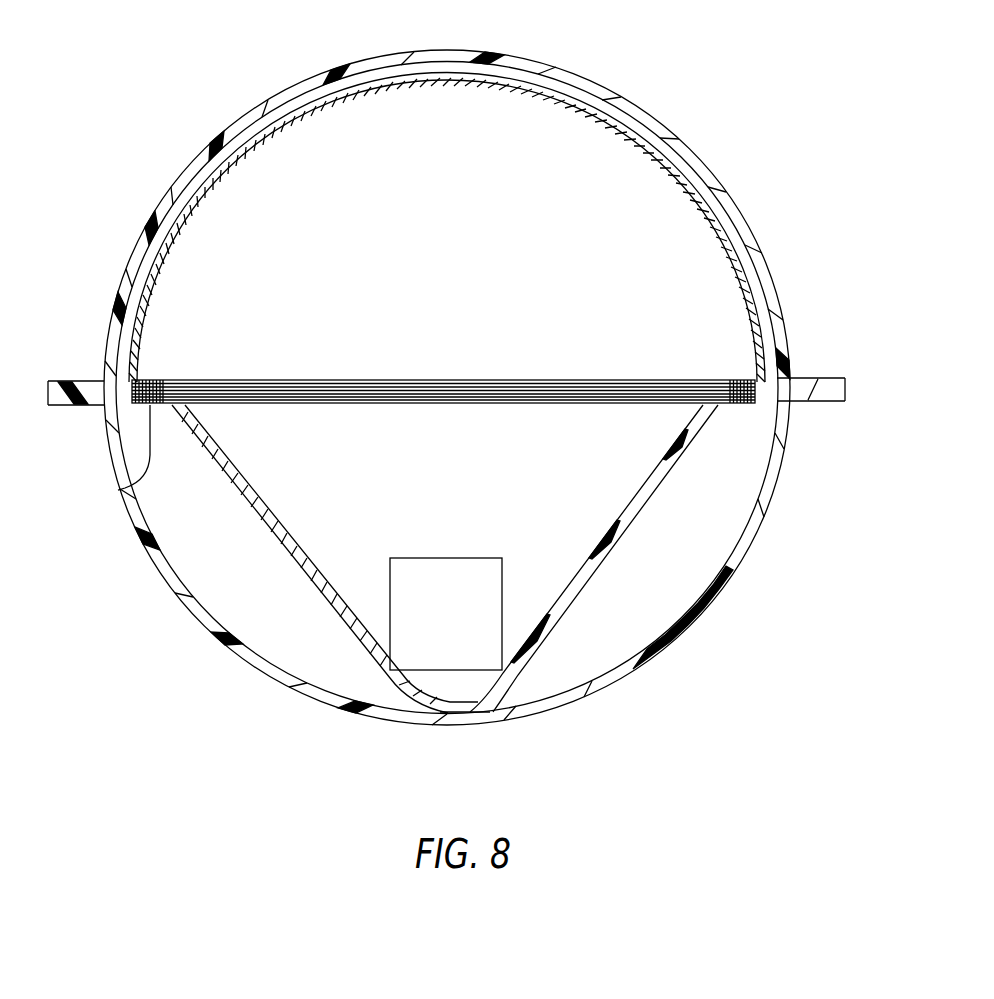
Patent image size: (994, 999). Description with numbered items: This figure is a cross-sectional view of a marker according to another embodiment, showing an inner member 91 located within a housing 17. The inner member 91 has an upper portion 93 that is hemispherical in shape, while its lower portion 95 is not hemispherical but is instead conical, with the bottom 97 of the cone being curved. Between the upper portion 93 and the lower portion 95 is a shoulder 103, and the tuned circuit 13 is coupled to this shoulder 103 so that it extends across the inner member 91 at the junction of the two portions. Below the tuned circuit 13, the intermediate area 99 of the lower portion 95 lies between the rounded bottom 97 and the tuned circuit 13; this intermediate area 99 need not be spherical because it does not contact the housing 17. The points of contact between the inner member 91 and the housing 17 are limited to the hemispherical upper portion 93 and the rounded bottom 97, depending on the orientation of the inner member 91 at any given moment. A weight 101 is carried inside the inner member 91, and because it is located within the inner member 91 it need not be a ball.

The housing 17 is at (177, 181).
The upper portion 93 is at (525, 84).
The inner member 91 is at (670, 162).
The tuned circuit 13 is at (388, 378).
The shoulder 103 is at (120, 486).
The lower portion 95 is at (260, 518).
The intermediate area 99 is at (607, 553).
The bottom 97 is at (451, 716).
The weight 101 is at (472, 670).